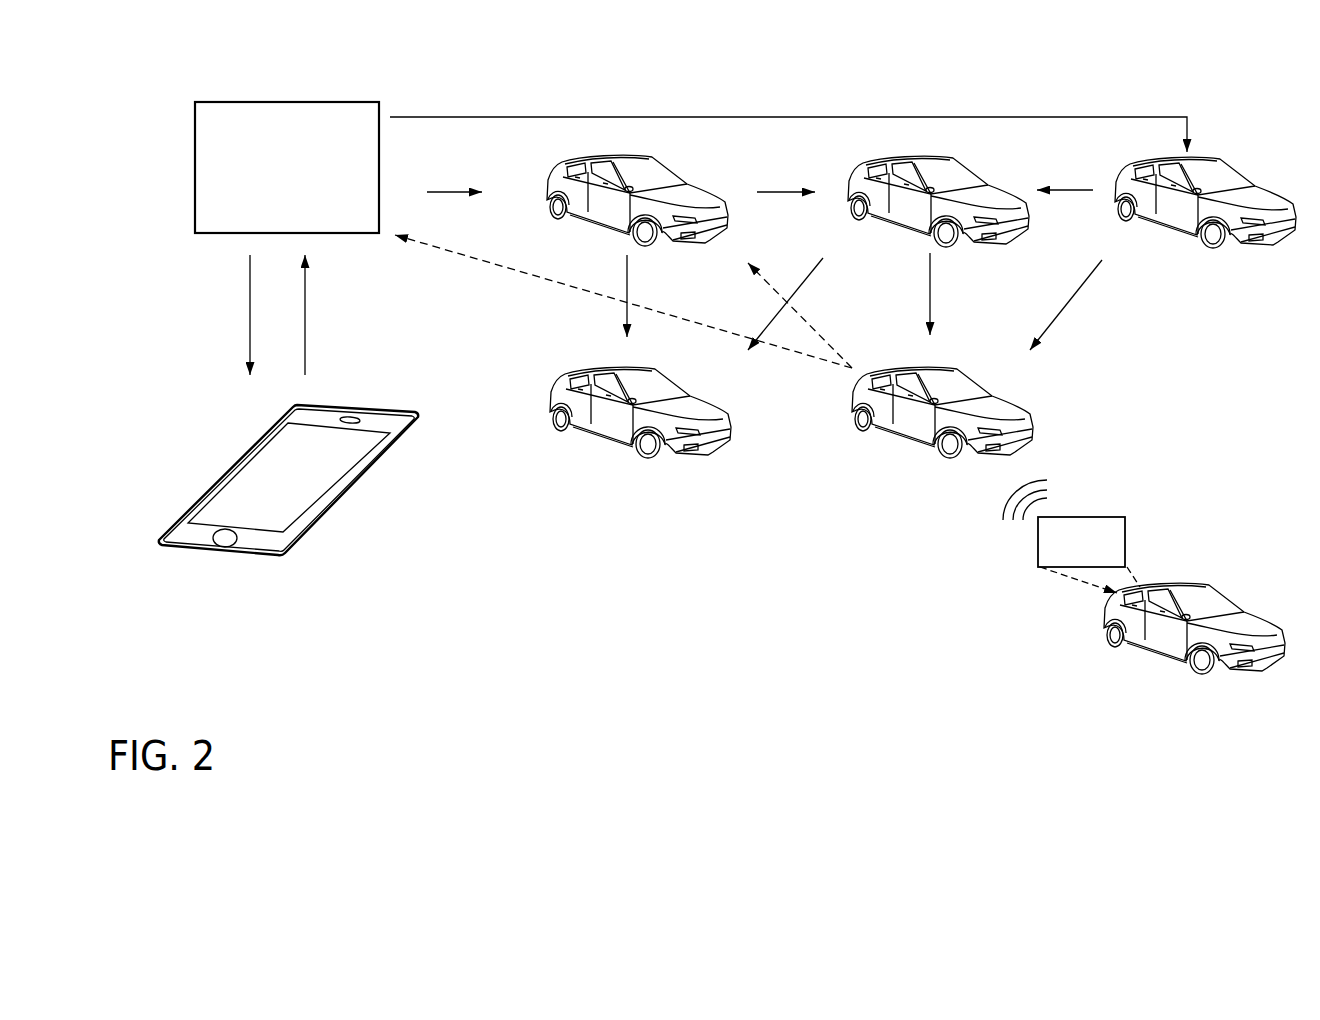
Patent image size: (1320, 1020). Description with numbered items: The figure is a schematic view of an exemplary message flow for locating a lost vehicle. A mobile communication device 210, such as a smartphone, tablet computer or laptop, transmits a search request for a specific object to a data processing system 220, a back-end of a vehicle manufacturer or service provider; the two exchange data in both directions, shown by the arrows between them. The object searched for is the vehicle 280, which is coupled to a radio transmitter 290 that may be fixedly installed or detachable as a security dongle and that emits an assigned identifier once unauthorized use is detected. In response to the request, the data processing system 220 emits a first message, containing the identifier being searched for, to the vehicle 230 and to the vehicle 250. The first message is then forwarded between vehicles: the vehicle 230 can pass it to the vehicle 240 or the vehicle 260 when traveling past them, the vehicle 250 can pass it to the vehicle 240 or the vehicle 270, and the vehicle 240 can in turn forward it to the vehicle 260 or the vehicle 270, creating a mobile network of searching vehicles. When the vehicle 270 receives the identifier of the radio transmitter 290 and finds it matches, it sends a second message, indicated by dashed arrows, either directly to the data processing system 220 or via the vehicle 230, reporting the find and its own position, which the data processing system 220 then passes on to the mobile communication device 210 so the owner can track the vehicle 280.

The mobile communication device 210 is at (257, 553).
The data processing system 220 is at (287, 167).
The vehicle 230 is at (598, 222).
The vehicle 240 is at (897, 223).
The vehicle 250 is at (1163, 220).
The vehicle 260 is at (607, 432).
The vehicle 270 is at (907, 433).
The vehicle 280 is at (1147, 648).
The radio transmitter 290 is at (1081, 542).